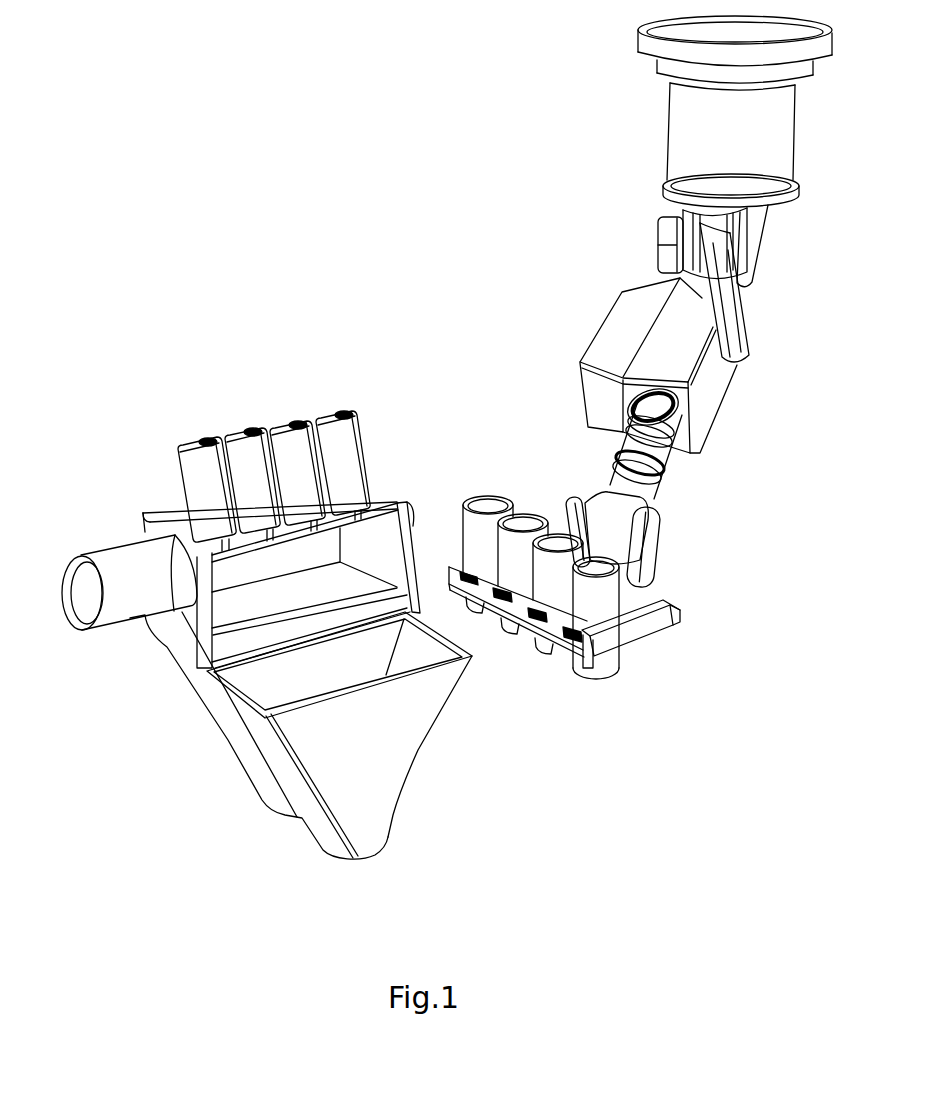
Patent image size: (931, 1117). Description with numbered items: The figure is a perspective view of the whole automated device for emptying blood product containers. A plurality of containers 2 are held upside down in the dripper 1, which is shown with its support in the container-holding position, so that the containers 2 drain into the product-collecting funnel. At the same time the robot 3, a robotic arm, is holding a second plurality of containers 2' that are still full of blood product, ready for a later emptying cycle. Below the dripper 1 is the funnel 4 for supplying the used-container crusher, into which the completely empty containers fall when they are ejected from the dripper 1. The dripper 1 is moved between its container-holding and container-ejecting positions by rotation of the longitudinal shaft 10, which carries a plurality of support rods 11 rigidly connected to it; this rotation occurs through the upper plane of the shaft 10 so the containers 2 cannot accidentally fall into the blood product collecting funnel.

The dripper 1 is at (133, 562).
The containers 2 is at (274, 423).
The second plurality of containers 2' is at (564, 603).
The robot 3 is at (626, 310).
The funnel for supplying the used-container crusher 4 is at (320, 818).
The longitudinal shaft 10 is at (376, 517).
The support rods 11 is at (345, 520).